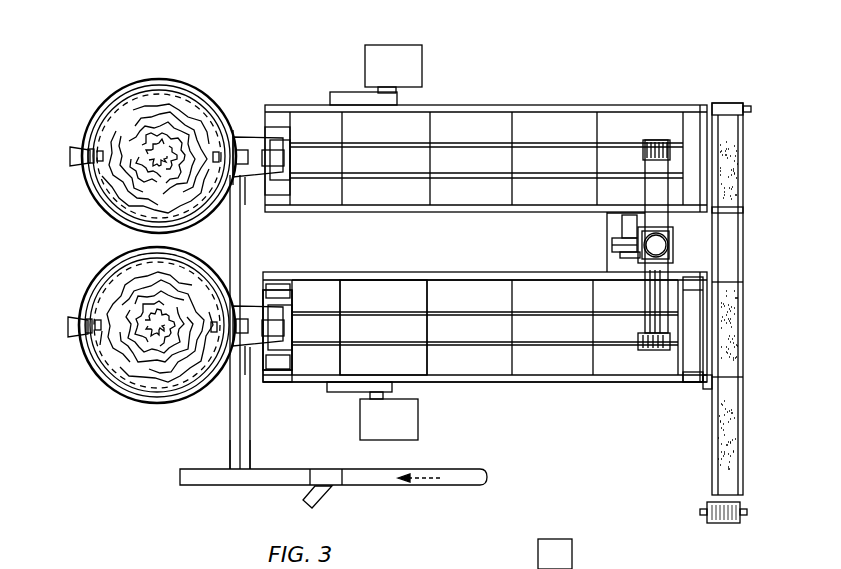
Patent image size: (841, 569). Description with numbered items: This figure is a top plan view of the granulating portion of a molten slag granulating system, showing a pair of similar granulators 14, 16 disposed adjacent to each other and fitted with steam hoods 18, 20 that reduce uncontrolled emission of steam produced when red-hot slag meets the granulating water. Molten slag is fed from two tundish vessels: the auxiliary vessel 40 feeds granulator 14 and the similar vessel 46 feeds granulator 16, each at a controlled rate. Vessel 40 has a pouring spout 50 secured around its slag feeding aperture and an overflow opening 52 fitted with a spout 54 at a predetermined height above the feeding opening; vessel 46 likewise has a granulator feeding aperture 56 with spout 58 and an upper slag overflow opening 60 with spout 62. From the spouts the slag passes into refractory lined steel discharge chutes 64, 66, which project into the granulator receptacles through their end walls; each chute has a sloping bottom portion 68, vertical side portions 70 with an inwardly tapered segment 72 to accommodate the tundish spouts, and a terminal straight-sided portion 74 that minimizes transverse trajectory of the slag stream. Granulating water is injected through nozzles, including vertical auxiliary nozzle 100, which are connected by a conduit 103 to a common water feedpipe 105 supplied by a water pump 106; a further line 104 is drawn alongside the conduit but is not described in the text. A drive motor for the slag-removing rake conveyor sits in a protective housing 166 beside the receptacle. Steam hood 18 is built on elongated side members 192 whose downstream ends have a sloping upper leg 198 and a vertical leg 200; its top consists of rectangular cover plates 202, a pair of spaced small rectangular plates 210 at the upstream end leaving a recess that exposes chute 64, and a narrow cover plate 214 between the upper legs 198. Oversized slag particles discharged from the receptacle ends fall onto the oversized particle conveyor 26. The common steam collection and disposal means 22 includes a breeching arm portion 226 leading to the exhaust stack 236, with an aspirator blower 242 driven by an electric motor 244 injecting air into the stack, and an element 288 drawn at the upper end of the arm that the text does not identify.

The granulator 14 is at (466, 384).
The granulator 16 is at (500, 103).
The steam hood 18 is at (548, 305).
The steam hood 20 is at (634, 134).
The steam collection and disposal means 22 is at (600, 230).
The oversized particle conveyor 26 is at (729, 415).
The auxiliary vessel 40 is at (161, 406).
The vessel 46 is at (178, 80).
The pouring spout 50 is at (248, 327).
The overflow opening 52 is at (93, 345).
The spout 54 is at (70, 326).
The granulator feeding aperture 56 is at (233, 128).
The spout 58 is at (248, 158).
The upper slag overflow opening 60 is at (101, 150).
The spout 62 is at (78, 150).
The discharge chute 64 is at (285, 318).
The discharge chute 66 is at (243, 133).
The sloping bottom portion 68 is at (245, 178).
The vertical side portion 70 is at (248, 302).
The inwardly tapered segment 72 is at (231, 305).
The terminal straight-sided portion 74 is at (275, 170).
The vertical auxiliary nozzle 100 is at (268, 384).
The conduit 103 is at (250, 444).
The post member 104 is at (230, 444).
The common water feedpipe 105 is at (207, 482).
The water pump 106 is at (322, 490).
The protective housing 166 is at (420, 412).
The side member 192 is at (480, 276).
The sloping upper leg 198 is at (697, 272).
The vertical leg 200 is at (705, 390).
The cover plate 202 is at (387, 292).
The small rectangular plate 210 is at (276, 290).
The cover plate 214 is at (692, 360).
The arm portion 226 is at (650, 327).
The exhaust stack 236 is at (675, 238).
The blower 242 is at (627, 258).
The electric motor 244 is at (628, 236).
The upper bar cap 288 is at (652, 182).